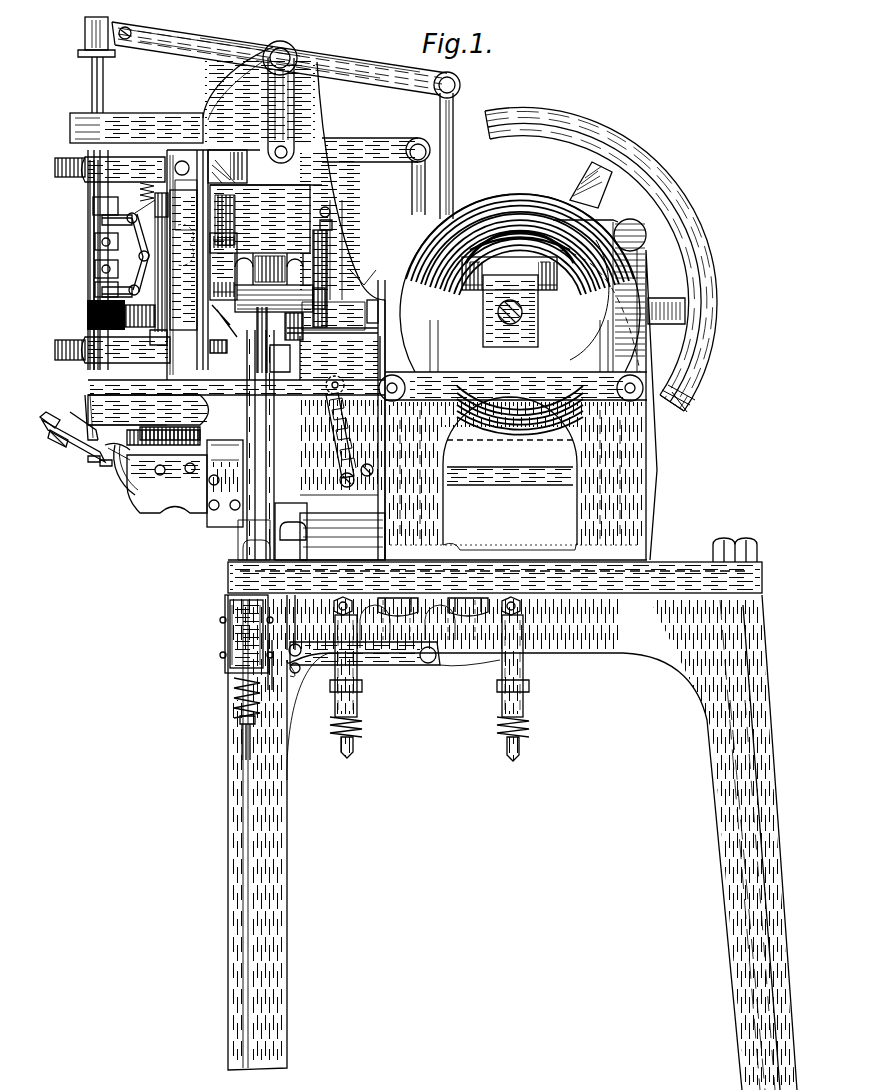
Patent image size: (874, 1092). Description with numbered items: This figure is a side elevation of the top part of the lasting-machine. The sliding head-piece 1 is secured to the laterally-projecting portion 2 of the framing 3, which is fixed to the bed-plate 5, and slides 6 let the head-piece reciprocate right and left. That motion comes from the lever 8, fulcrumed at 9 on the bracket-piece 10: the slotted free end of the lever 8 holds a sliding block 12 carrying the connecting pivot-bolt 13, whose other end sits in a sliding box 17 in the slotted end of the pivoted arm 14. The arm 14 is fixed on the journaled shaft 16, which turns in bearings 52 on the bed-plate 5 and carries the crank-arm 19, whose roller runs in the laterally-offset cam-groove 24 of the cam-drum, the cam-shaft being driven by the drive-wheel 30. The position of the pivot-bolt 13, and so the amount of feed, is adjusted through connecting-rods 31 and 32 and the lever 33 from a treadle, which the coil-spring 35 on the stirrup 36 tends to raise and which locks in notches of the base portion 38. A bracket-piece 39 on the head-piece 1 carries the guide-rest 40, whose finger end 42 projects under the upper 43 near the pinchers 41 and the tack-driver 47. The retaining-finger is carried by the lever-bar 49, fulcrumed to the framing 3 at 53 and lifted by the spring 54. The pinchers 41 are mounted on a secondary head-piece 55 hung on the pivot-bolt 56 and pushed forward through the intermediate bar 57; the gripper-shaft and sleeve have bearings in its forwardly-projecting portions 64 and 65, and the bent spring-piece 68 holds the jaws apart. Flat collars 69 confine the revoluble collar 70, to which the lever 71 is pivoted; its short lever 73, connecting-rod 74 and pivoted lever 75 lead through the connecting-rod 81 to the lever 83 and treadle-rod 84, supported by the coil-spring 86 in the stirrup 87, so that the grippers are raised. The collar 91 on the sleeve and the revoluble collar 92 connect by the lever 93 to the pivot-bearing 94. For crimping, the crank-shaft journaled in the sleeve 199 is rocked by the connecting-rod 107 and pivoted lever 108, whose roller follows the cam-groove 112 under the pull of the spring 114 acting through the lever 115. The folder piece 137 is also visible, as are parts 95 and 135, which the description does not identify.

The head-piece 1 is at (207, 150).
The laterally-projecting portion 2 is at (326, 188).
The framing 3 is at (333, 112).
The bed-plate 5 is at (680, 562).
The slides 6 is at (222, 170).
The lever 8 is at (222, 270).
The fulcrum 9 is at (364, 274).
The bracket-piece 10 is at (287, 253).
The sliding block 12 is at (212, 326).
The connecting pivot-bolt 13 is at (210, 347).
The pivoted arm 14 is at (270, 420).
The journaled shaft 16 is at (368, 505).
The sliding box 17 is at (270, 300).
The crank-arm 19 is at (384, 272).
The cam-groove 24 is at (515, 326).
The drive-wheel 30 is at (700, 267).
The connecting-rod 31 is at (226, 440).
The connecting-rod 32 is at (242, 722).
The lever 33 is at (225, 640).
The coil-spring 35 is at (240, 718).
The stirrup 36 is at (232, 683).
The base portion 38 is at (272, 685).
The bracket-piece 39 is at (148, 417).
The guide-rest 40 is at (58, 456).
The pinchers 41 is at (118, 462).
The finger end 42 is at (96, 476).
The upper 43 is at (95, 464).
The tack-driver 47 is at (104, 85).
The lever-bar 49 is at (85, 433).
The bearings 52 is at (272, 532).
The fulcrum 53 is at (159, 341).
The spring 54 is at (350, 328).
The secondary head-piece 55 is at (177, 167).
The pivot-bolt 56 is at (183, 162).
The intermediate bar 57 is at (278, 348).
The forwardly-projecting portion 64 is at (140, 165).
The forwardly-projecting portion 65 is at (125, 347).
The bent spring-piece 68 is at (85, 405).
The flat collars 69 is at (93, 207).
The revoluble collar 70 is at (102, 218).
The lever 71 is at (162, 203).
The short lever 73 is at (330, 210).
The connecting-rod 74 is at (332, 224).
The pivoted lever 75 is at (342, 375).
The connecting-rod 81 is at (298, 603).
The lever 83 is at (364, 659).
The treadle-rod 84 is at (354, 750).
The coil-spring 86 is at (360, 705).
The stirrup 87 is at (332, 705).
The collar 91 is at (95, 264).
The collar 92 is at (95, 282).
The lever 93 is at (147, 221).
The pivot-bearing 94 is at (185, 280).
The link 95 is at (140, 255).
The connecting-rod 107 is at (342, 265).
The pivoted lever 108 is at (318, 395).
The cam-groove 112 is at (87, 320).
The spring 114 is at (530, 725).
The intermediate lever 115 is at (464, 670).
The cam 135 is at (122, 480).
The folder piece 137 is at (165, 480).
The sleeve 199 is at (250, 195).